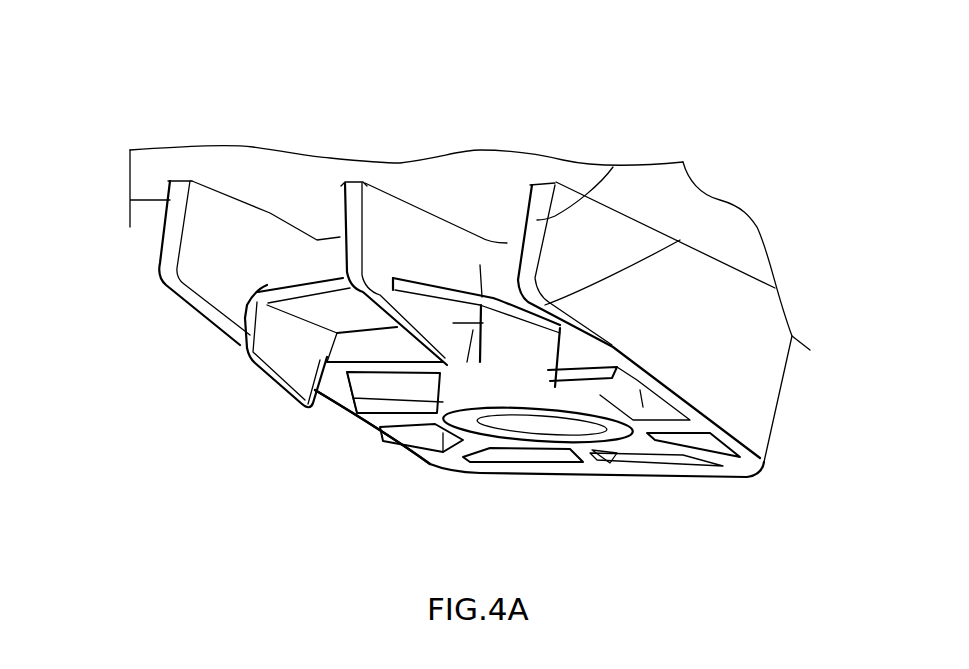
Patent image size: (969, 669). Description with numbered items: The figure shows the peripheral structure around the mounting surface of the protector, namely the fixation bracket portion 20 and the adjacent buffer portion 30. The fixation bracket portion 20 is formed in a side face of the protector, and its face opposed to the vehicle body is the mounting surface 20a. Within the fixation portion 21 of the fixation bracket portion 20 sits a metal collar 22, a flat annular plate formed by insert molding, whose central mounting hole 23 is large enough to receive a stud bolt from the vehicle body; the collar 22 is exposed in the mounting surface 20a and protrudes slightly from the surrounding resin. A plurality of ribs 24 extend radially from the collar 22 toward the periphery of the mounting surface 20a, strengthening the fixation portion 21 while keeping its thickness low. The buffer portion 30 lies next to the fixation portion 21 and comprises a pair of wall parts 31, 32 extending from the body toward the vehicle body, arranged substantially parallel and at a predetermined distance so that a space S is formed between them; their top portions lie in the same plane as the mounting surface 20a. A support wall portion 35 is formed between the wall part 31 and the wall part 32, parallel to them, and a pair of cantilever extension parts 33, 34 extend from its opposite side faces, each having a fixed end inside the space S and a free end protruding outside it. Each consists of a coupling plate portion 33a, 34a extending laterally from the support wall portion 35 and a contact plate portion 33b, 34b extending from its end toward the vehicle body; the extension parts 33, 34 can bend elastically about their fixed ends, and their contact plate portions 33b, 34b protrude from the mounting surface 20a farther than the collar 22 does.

The fixation bracket portion 20 is at (325, 443).
The mounting surface 20a is at (378, 430).
The fixation portion 21 is at (477, 475).
The collar 22 is at (613, 433).
The mounting hole 23 is at (555, 430).
The ribs 24 is at (460, 452).
The buffer portion 30 is at (147, 280).
The wall part 31 is at (162, 244).
The wall part 32 is at (613, 167).
The extension part 33 is at (250, 300).
The coupling plate portion 33a is at (307, 283).
The contact plate portion 33b is at (257, 373).
The extension part 34 is at (677, 242).
The coupling plate portion 34a is at (458, 290).
The contact plate portion 34b is at (543, 350).
The support wall portion 35 is at (383, 230).
The space S is at (504, 252).